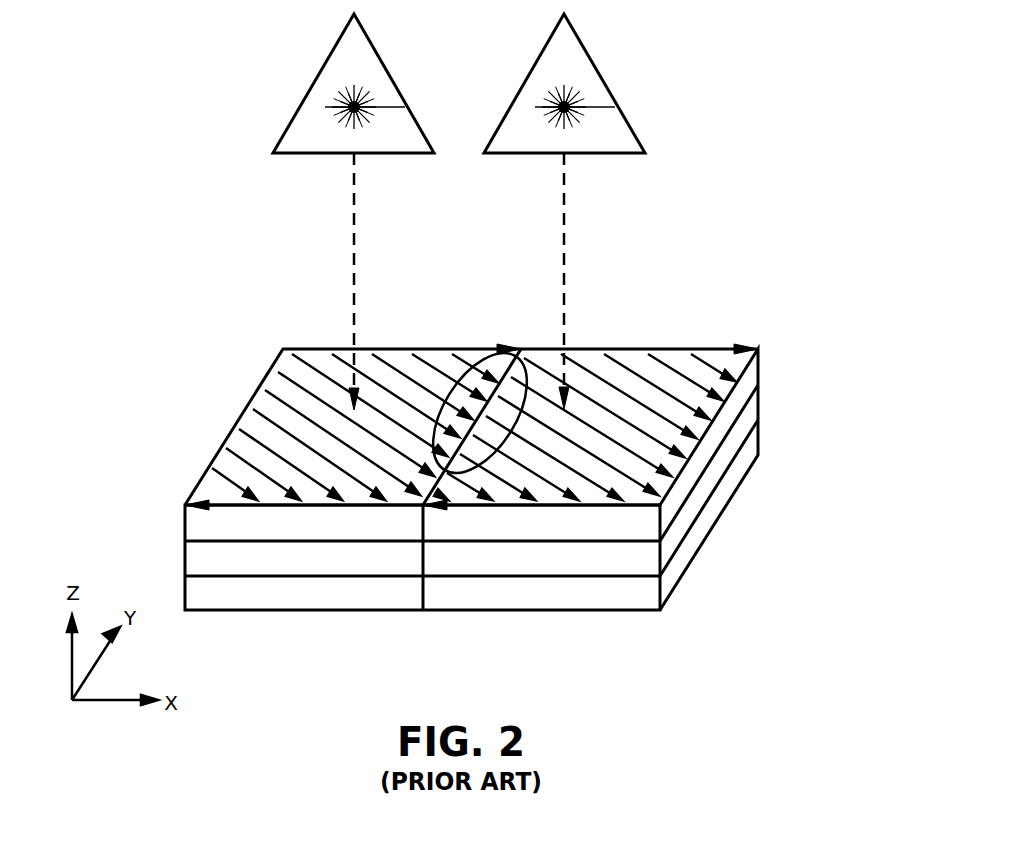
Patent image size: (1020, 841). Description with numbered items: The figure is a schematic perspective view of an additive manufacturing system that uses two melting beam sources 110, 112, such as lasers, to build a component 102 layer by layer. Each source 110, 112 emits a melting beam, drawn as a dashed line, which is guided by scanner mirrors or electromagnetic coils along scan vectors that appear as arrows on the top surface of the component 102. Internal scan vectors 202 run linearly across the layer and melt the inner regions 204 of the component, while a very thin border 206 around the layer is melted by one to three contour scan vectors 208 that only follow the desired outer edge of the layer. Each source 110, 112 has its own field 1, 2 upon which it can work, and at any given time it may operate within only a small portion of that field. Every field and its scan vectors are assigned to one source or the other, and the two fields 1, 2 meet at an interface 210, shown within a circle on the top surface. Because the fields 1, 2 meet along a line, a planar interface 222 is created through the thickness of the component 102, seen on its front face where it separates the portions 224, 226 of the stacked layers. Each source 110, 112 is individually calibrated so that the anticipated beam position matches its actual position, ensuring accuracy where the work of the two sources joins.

The field 1 is at (277, 348).
The field 2 is at (613, 337).
The illustrative component 102 is at (797, 342).
The melting beam source 110 is at (312, 82).
The melting beam source 112 is at (608, 82).
The internal scan vectors 202 is at (418, 385).
The inner regions 204 is at (336, 427).
The border 206 is at (321, 364).
The contour scan vectors 208 is at (262, 385).
The interface 210 is at (538, 355).
The planar interface 222 is at (422, 560).
The first layer portion 224 is at (313, 498).
The second layer portion 226 is at (548, 497).